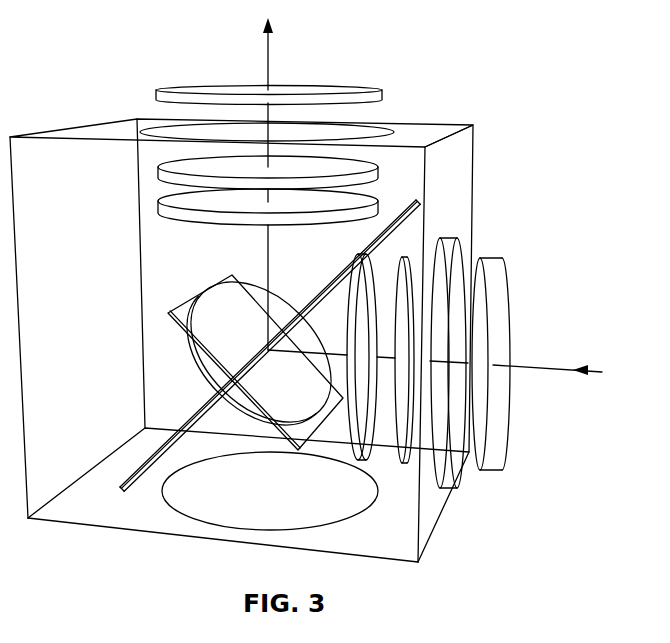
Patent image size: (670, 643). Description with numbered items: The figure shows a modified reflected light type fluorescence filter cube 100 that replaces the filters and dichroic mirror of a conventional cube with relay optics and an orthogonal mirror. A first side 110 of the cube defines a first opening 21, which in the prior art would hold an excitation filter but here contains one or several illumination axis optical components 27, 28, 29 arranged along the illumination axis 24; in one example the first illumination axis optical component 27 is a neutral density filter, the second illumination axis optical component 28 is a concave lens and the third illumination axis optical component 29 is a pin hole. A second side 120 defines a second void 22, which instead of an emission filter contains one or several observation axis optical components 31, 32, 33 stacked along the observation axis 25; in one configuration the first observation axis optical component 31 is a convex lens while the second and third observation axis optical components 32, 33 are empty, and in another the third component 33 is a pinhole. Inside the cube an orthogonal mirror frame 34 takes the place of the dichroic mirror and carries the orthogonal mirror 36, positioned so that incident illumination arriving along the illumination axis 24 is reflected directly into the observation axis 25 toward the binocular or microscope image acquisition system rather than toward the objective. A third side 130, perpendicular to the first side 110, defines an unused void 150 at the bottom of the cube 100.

The modified reflected light type fluorescence filter cube 100 is at (520, 92).
The first side of cube 110 is at (465, 183).
The second side of cube 120 is at (80, 132).
The third side of cube 130 is at (92, 503).
The second opening in fluorescence filter cube 22 is at (385, 133).
The observation axis 25 is at (270, 56).
The illumination axis 24 is at (598, 372).
The first observation axis optical component 31 is at (200, 84).
The second observation axis optical component 32 is at (157, 172).
The third observation axis optical component 33 is at (157, 207).
The orthogonal mirror frame 34 is at (132, 475).
The orthogonal mirror 36 is at (215, 288).
The third illumination axis optical component 29 is at (372, 463).
The second illumination axis optical component 28 is at (415, 473).
The first opening in fluorescence filter cube 21 is at (462, 245).
The first illumination axis optical component 27 is at (483, 473).
The unused void 150 is at (288, 502).